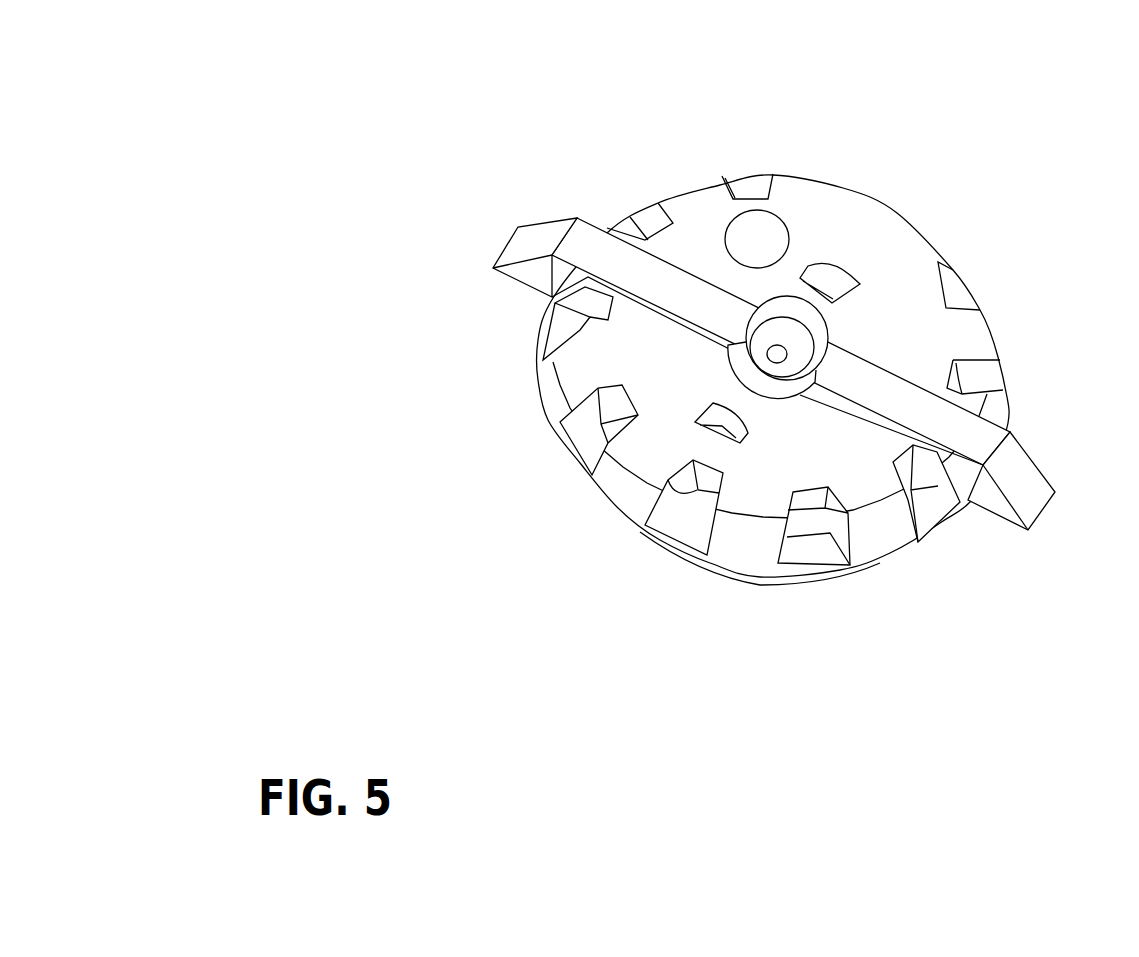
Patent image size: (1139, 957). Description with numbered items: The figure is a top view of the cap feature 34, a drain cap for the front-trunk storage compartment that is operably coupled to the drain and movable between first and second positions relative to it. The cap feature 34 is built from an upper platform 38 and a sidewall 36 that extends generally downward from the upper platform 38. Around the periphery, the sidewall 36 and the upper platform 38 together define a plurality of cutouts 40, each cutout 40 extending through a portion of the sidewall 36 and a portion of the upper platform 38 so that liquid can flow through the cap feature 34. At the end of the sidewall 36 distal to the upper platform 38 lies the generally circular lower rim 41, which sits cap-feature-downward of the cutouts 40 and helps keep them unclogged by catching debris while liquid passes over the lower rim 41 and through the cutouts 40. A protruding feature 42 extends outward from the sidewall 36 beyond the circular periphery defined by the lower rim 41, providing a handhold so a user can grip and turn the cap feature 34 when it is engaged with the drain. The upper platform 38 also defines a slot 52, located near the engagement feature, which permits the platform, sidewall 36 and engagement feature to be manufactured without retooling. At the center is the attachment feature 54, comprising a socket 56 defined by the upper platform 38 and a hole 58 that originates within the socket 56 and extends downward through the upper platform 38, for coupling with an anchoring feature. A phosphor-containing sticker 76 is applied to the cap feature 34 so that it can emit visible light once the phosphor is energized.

The cap feature 34 is at (807, 122).
The sidewall 36 is at (620, 483).
The upper platform 38 is at (663, 390).
The cutout 40 is at (918, 490).
The lower rim 41 is at (797, 577).
The protruding feature 42 is at (538, 275).
The slot 52 is at (828, 272).
The attachment feature 54 is at (757, 327).
The socket 56 is at (793, 336).
The hole 58 is at (786, 353).
The sticker 76 is at (763, 243).